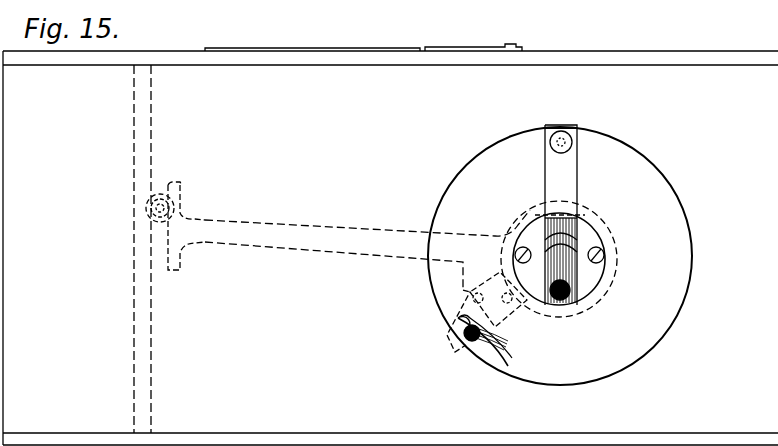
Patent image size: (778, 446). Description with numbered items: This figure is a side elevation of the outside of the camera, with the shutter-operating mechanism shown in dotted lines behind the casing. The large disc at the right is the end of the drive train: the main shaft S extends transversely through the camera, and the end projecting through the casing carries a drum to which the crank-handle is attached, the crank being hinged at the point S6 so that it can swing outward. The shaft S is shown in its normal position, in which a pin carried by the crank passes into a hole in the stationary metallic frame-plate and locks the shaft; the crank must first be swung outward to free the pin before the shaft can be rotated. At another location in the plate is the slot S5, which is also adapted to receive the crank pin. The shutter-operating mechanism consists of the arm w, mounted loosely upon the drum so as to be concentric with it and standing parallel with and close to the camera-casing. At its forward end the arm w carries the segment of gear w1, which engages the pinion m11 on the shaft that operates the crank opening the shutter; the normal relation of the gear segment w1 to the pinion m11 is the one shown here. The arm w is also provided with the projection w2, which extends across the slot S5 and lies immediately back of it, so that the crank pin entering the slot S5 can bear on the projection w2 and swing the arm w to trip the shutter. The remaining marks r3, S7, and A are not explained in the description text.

The strip r3 is at (470, 50).
The hinge point S6 is at (583, 215).
The spring strip S7 is at (578, 186).
The main shaft S is at (565, 262).
The arm w is at (292, 220).
The segment of gear w1 is at (190, 192).
The pinion m11 is at (148, 210).
The projection w2 is at (457, 317).
The slot S5 is at (465, 342).
The plate A is at (310, 344).